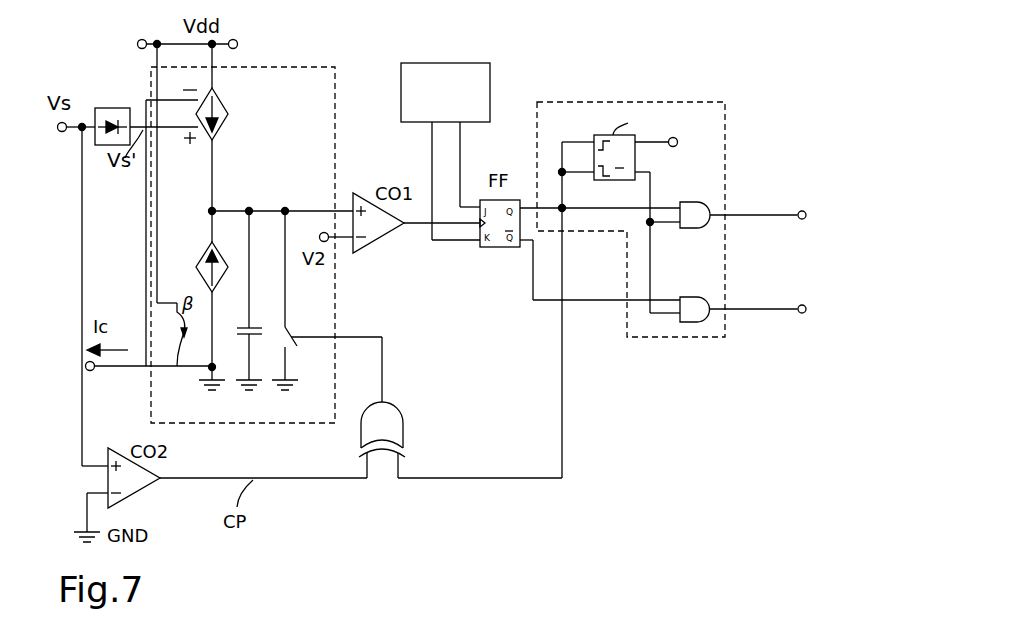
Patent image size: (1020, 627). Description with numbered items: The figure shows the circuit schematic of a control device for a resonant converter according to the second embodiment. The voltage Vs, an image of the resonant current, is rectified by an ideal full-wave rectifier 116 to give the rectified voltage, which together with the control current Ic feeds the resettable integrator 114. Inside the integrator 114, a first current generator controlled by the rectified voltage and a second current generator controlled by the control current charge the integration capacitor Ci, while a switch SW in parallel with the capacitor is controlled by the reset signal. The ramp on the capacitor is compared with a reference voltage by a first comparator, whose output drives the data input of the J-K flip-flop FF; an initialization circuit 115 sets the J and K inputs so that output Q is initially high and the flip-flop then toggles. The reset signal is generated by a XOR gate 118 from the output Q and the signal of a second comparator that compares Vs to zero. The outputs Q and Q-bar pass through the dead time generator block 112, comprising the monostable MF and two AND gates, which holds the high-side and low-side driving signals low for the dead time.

The dead time generator block 112 is at (677, 102).
The resettable integrator 114 is at (300, 66).
The initialization circuit 115 is at (466, 95).
The ideal full-wave rectifier 116 is at (107, 108).
The XOR gate 118 is at (378, 445).